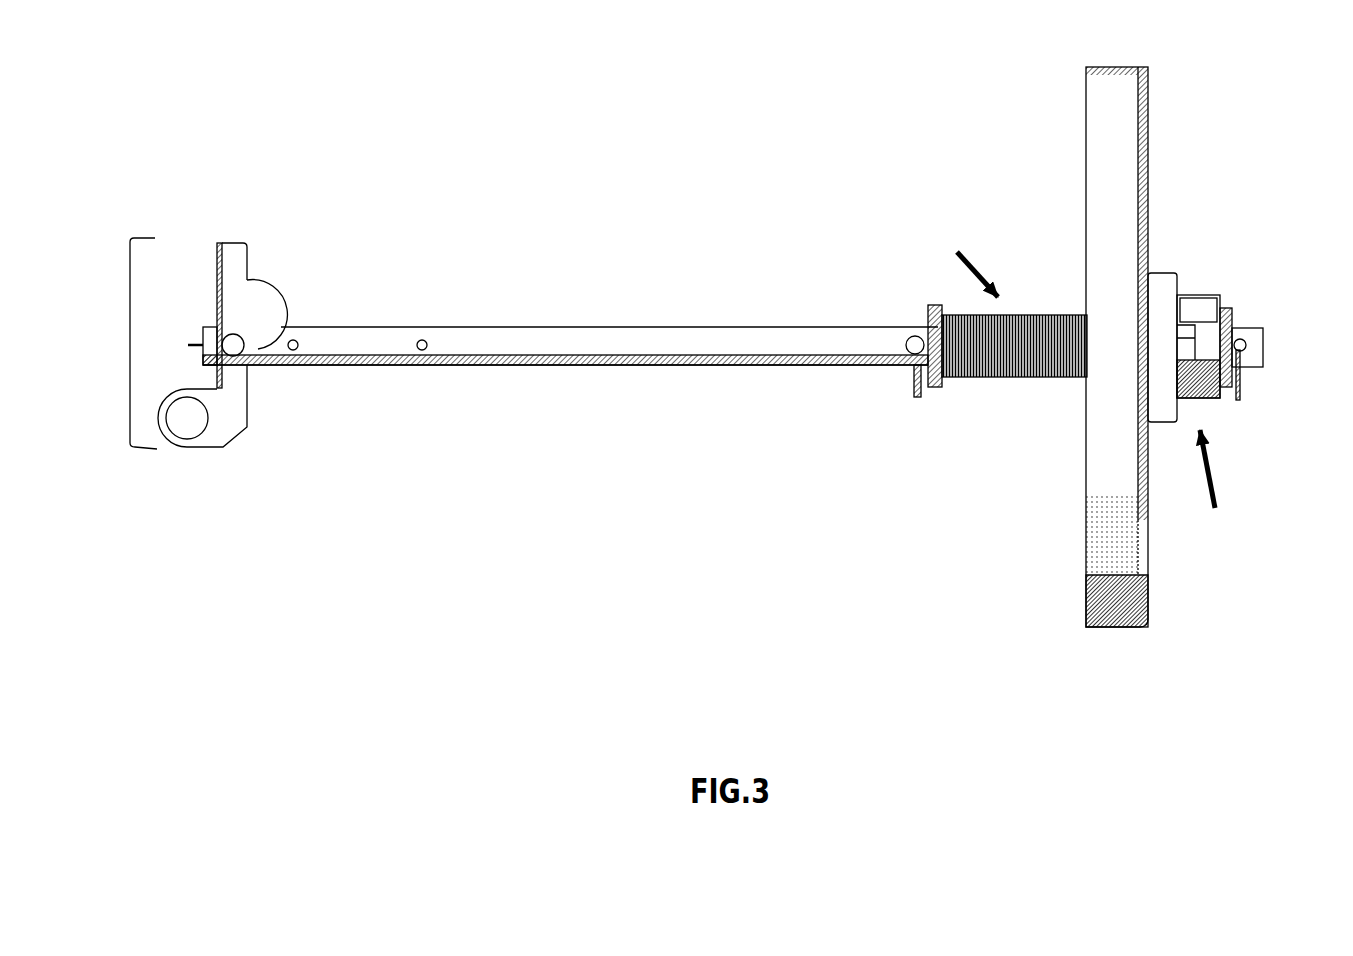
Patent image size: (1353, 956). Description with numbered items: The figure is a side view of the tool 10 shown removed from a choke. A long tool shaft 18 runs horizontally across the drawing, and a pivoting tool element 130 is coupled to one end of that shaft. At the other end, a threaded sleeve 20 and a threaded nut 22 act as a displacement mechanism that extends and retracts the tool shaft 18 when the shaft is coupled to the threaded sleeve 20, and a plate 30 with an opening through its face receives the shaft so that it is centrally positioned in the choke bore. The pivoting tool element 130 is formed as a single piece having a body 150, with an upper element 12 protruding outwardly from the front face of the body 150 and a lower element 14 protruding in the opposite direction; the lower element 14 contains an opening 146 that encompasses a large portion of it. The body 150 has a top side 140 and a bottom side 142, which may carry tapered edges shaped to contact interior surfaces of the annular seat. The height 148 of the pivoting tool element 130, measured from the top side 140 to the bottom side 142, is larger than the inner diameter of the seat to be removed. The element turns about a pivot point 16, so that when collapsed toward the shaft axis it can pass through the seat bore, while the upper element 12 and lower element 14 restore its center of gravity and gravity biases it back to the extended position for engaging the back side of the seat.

The tool 10 is at (325, 563).
The upper element 12 is at (312, 289).
The lower element 14 is at (168, 467).
The pivot point 16 is at (243, 361).
The tool shaft 18 is at (635, 348).
The threaded sleeve 20 is at (1047, 306).
The threaded nut 22 is at (1220, 266).
The plate 30 is at (1130, 595).
The pivoting tool element 130 is at (187, 218).
The top side 140 is at (231, 245).
The bottom side 142 is at (233, 450).
The opening 146 is at (193, 417).
The height 148 is at (130, 352).
The body 150 is at (222, 300).